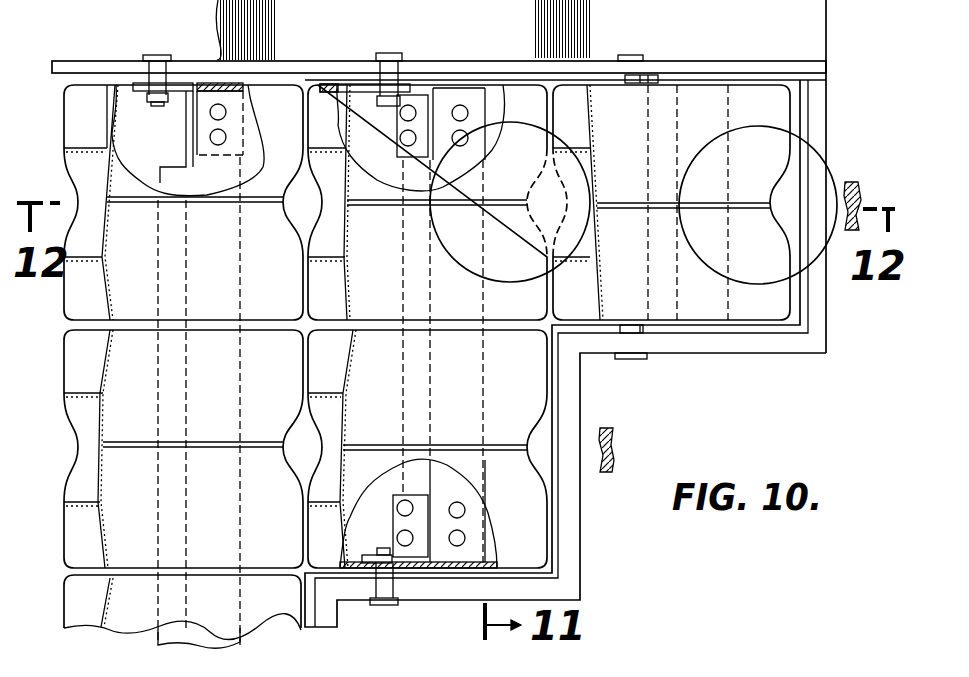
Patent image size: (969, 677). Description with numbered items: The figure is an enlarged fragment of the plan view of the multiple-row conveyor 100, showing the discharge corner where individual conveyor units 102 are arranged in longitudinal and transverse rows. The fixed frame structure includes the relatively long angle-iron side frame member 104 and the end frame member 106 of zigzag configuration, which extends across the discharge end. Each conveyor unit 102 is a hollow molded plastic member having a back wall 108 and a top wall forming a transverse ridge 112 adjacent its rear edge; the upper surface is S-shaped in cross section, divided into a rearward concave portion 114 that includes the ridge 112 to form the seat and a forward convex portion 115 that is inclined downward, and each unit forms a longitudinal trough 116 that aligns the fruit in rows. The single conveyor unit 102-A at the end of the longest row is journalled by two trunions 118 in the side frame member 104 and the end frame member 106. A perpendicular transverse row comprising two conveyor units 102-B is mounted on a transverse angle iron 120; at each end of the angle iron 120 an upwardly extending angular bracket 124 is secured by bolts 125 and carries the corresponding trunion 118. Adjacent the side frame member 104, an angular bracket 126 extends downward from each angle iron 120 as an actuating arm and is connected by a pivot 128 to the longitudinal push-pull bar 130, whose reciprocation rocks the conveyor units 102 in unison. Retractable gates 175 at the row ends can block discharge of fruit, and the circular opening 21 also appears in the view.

The multiple-row conveyor 100 is at (830, 40).
The conveyor unit 102 is at (78, 353).
The conveyor unit at end of longest longitudinal row 102-A is at (754, 320).
The conveyor units of two-unit transverse row 102-B is at (532, 100).
The side frame member 104 is at (813, 16).
The end frame member 106 is at (703, 343).
The back wall 108 is at (68, 95).
The transverse ridge 112 is at (100, 162).
The rearward concave portion 114 is at (630, 133).
The forward convex portion 115 is at (273, 103).
The longitudinal trough 116 is at (274, 213).
The trunion 118 is at (389, 53).
The transverse angle iron 120 is at (167, 183).
The angular bracket 124 is at (423, 92).
The bolts 125 is at (403, 140).
The angular bracket 126 is at (180, 83).
The pivot 128 is at (153, 56).
The push-pull bar 130 is at (73, 61).
The retractable gate 175 is at (857, 181).
The opening 21 is at (527, 277).